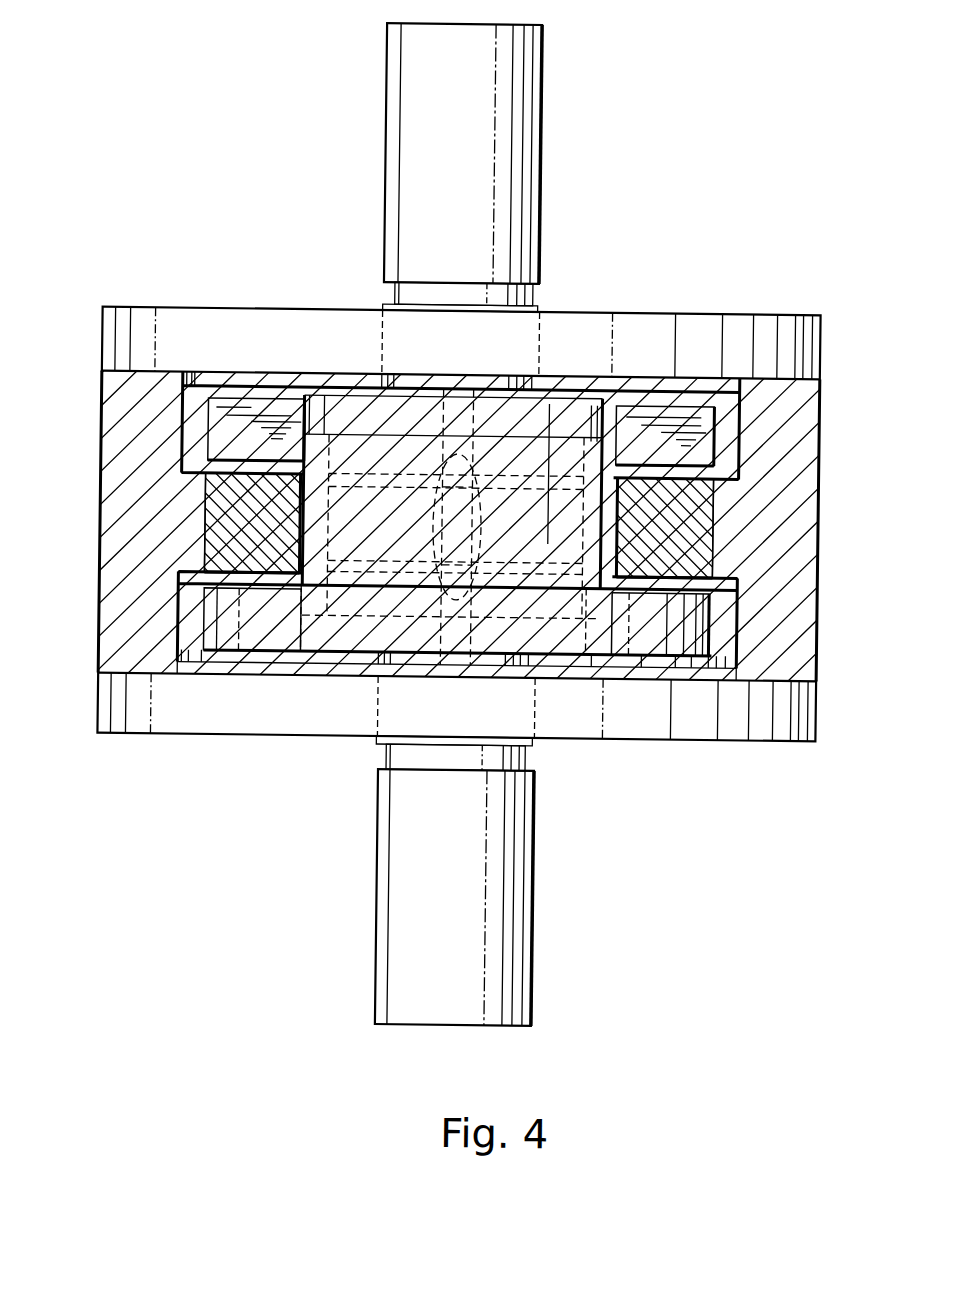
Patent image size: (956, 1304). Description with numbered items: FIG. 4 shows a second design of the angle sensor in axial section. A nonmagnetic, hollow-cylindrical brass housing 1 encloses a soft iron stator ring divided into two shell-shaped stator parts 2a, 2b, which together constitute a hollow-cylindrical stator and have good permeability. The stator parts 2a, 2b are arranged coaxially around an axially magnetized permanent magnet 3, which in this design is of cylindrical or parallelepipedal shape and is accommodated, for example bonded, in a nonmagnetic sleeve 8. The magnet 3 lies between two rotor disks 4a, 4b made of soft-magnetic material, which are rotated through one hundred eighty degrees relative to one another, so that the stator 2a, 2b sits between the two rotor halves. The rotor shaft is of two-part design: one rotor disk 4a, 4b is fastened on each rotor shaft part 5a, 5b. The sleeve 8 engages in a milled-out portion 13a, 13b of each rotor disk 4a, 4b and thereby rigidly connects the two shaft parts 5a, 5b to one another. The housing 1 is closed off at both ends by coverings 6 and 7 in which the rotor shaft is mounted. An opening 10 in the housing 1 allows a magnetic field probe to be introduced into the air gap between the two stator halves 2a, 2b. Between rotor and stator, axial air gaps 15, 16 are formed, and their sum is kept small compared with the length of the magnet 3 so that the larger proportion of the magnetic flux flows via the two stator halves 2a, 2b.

The housing 1 is at (792, 420).
The stator part 2a is at (683, 507).
The stator part 2b is at (225, 498).
The permanent magnet 3 is at (392, 542).
The rotor disk 4a is at (274, 409).
The rotor disk 4b is at (679, 640).
The rotor shaft part 5a is at (514, 69).
The rotor shaft part 5b is at (499, 988).
The covering 6 is at (738, 327).
The covering 7 is at (762, 720).
The sleeve 8 is at (313, 536).
The opening 10 is at (457, 528).
The milled-out portion 13a is at (591, 464).
The milled-out portion 13b is at (604, 605).
The air gap 15 is at (219, 581).
The air gap 16 is at (217, 468).